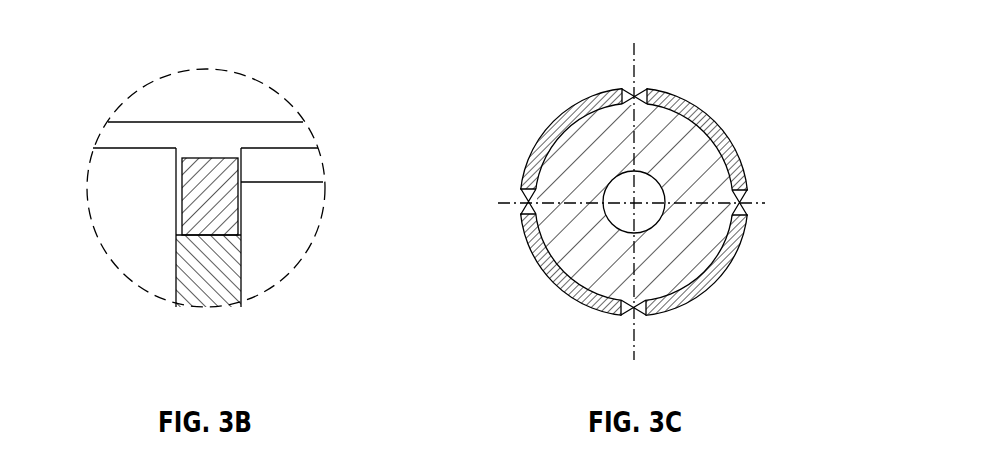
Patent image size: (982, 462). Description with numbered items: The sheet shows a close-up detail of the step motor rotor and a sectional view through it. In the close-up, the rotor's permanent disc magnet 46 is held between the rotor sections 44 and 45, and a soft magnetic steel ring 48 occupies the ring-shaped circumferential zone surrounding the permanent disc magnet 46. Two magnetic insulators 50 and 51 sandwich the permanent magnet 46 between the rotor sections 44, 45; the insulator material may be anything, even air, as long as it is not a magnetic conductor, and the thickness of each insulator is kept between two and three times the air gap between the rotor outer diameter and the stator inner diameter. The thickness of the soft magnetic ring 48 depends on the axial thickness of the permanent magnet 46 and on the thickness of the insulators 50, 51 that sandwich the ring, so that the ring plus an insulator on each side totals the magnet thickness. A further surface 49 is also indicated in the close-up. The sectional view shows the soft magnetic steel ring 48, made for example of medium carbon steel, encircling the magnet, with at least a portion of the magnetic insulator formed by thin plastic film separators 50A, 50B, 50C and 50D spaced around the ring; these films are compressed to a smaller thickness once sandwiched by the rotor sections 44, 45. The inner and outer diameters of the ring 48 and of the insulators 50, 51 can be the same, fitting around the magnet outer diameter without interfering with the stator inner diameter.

In FIG. 3B, the rotor section 44 is at (95, 197).
In FIG. 3B, the rotor section 45 is at (297, 223).
In FIG. 3B, the permanent disc magnet 46 is at (210, 293).
In FIG. 3B, the soft magnetic steel ring 48 is at (202, 158).
In FIG. 3C, the soft magnetic steel ring 48 is at (572, 118).
In FIG. 3B, the shoulder surface 49 is at (310, 165).
In FIG. 3B, the magnetic insulator 50 is at (177, 185).
In FIG. 3B, the magnetic insulator 51 is at (238, 185).
In FIG. 3C, the thin plastic film separator 50A is at (645, 85).
In FIG. 3C, the thin plastic film separator 50B is at (750, 195).
In FIG. 3C, the thin plastic film separator 50C is at (625, 317).
In FIG. 3C, the thin plastic film separator 50D is at (517, 197).